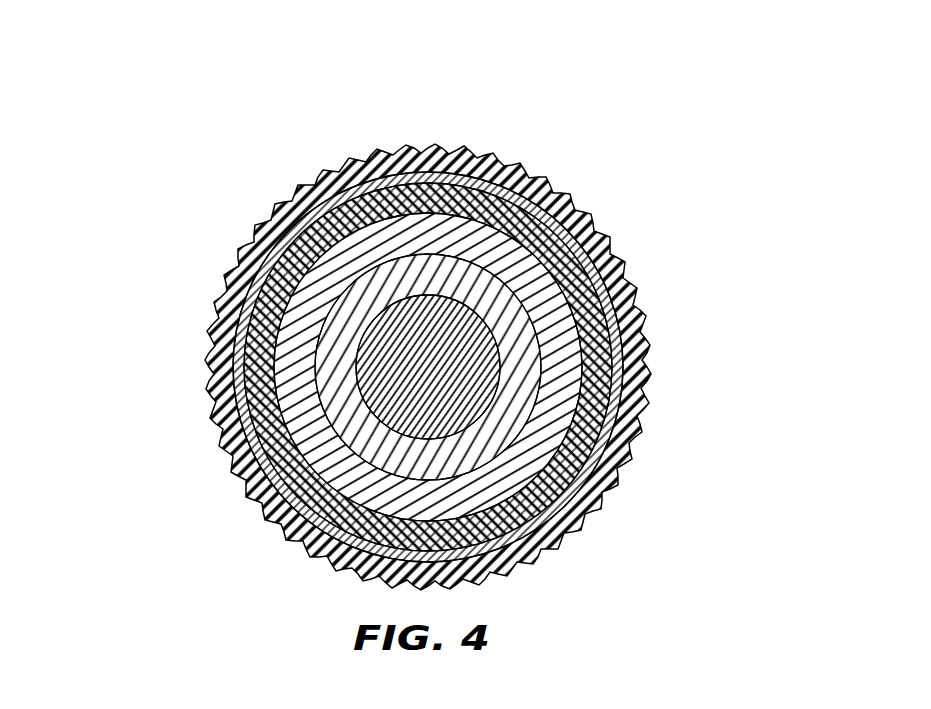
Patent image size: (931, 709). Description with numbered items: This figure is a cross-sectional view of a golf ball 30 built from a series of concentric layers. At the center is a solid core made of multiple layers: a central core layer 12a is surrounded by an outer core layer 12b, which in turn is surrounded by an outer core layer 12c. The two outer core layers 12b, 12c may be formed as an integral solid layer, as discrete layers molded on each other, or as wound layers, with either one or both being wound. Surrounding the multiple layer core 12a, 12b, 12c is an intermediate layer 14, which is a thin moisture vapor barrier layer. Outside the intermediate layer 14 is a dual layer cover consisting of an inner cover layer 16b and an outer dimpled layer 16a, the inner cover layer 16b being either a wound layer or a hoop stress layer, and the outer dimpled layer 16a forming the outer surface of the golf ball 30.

The golf ball 30 is at (434, 320).
The core layer 12a is at (473, 387).
The core layer 12b is at (350, 405).
The core layer 12c is at (300, 285).
The intermediate layer 14 is at (292, 262).
The outer dimpled layer 16a is at (360, 157).
The inner cover layer 16b is at (437, 180).